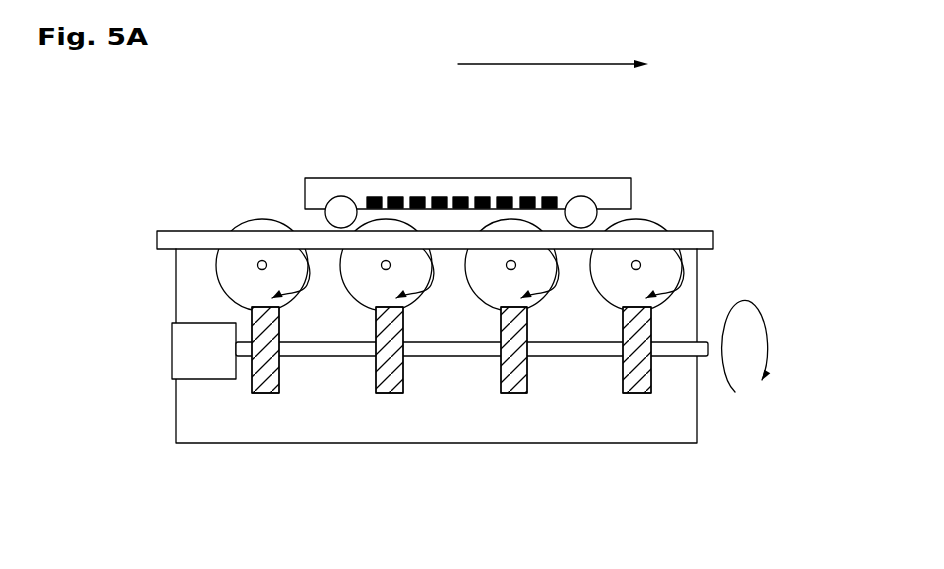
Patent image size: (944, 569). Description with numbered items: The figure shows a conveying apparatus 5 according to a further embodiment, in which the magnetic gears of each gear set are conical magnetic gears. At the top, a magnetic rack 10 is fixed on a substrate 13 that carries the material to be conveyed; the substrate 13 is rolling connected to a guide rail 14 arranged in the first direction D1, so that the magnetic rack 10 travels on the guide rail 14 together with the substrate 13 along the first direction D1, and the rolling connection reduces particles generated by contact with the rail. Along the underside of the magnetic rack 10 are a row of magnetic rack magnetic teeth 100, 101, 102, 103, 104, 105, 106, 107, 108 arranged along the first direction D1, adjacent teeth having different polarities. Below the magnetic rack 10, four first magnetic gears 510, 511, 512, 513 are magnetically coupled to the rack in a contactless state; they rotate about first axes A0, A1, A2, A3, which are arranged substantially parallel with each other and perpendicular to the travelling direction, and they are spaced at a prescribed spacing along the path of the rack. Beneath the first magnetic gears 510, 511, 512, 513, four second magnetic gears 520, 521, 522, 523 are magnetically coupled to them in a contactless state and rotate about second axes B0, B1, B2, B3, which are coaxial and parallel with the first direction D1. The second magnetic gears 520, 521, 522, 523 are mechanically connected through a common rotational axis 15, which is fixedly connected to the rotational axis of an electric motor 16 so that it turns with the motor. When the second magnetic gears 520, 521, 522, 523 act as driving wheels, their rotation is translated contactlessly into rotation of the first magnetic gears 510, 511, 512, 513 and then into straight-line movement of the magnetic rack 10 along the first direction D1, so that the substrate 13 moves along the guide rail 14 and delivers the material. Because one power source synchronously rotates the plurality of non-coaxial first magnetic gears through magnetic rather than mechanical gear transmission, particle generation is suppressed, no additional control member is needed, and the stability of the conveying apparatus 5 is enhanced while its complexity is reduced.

The conveying apparatus 5 is at (748, 73).
The magnetic rack 10 is at (560, 206).
The substrate 13 is at (313, 195).
The guide rail 14 is at (700, 236).
The rotational axis 15 is at (703, 356).
The electric motor 16 is at (172, 349).
The magnetic rack magnetic tooth 100 is at (374, 197).
The magnetic rack magnetic tooth 101 is at (396, 197).
The magnetic rack magnetic tooth 102 is at (418, 197).
The magnetic rack magnetic tooth 103 is at (440, 197).
The magnetic rack magnetic tooth 104 is at (462, 197).
The magnetic rack magnetic tooth 105 is at (483, 197).
The magnetic rack magnetic tooth 106 is at (505, 197).
The magnetic rack magnetic tooth 107 is at (527, 197).
The magnetic rack magnetic tooth 108 is at (550, 197).
The first magnetic gear 510 is at (240, 293).
The first magnetic gear 511 is at (430, 287).
The first magnetic gear 512 is at (553, 287).
The first magnetic gear 513 is at (670, 288).
The second magnetic gear 520 is at (268, 387).
The second magnetic gear 521 is at (392, 387).
The second magnetic gear 522 is at (516, 388).
The second magnetic gear 523 is at (635, 388).
The first axis A0 is at (262, 265).
The first axis A1 is at (386, 265).
The first axis A2 is at (511, 265).
The first axis A3 is at (637, 265).
The second axis B0 is at (293, 356).
The second axis B1 is at (417, 356).
The second axis B2 is at (550, 356).
The second axis B3 is at (685, 356).
The first direction D1 is at (553, 52).